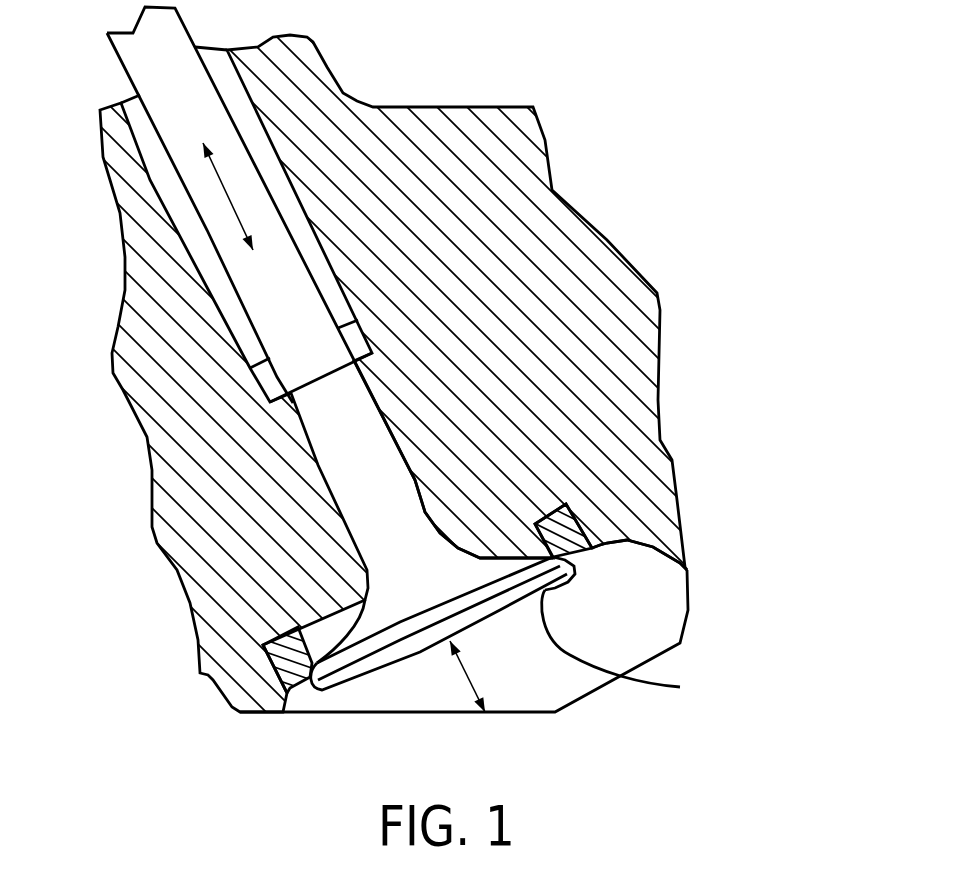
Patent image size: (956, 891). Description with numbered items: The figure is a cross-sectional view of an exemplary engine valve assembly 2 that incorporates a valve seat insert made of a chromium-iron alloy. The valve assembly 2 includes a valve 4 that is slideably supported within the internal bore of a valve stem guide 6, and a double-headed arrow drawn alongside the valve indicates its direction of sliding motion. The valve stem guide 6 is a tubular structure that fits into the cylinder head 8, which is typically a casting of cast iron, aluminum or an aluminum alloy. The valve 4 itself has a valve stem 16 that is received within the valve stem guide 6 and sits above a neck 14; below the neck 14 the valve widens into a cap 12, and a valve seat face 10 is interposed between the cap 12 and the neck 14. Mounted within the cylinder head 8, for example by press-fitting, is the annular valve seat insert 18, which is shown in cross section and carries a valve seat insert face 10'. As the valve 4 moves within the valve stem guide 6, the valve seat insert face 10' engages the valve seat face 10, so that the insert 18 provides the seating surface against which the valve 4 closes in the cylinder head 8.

The engine valve assembly 2 is at (497, 466).
The valve 4 is at (227, 197).
The valve stem guide 6 is at (215, 307).
The cylinder head 8 is at (637, 512).
The valve seat face 10 is at (221, 668).
The valve seat insert face 10' is at (647, 644).
The cap 12 is at (573, 567).
The neck 14 is at (467, 552).
The valve stem 16 is at (273, 380).
The valve seat insert 18 is at (560, 527).